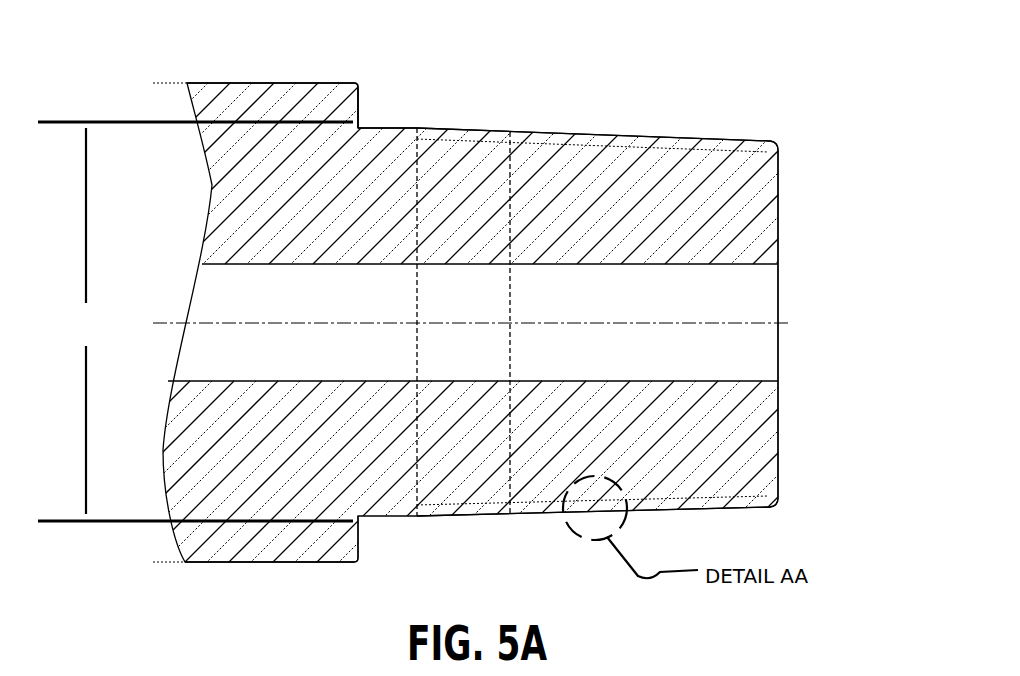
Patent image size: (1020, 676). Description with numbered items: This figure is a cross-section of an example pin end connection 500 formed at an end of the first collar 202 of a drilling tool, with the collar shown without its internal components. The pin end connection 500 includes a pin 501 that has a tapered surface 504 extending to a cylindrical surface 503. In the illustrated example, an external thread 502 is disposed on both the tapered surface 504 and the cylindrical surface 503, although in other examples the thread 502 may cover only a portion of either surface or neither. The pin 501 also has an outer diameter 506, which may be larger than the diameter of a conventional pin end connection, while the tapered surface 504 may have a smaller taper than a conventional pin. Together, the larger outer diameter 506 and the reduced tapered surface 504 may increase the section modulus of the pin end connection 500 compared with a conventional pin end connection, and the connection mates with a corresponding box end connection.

The first collar 202 is at (195, 36).
The pin end connection 500 is at (690, 52).
The pin 501 is at (741, 101).
The external thread 502 is at (658, 497).
The cylindrical surface 503 is at (452, 128).
The tapered surface 504 is at (683, 138).
The outer diameter 506 is at (195, 321).